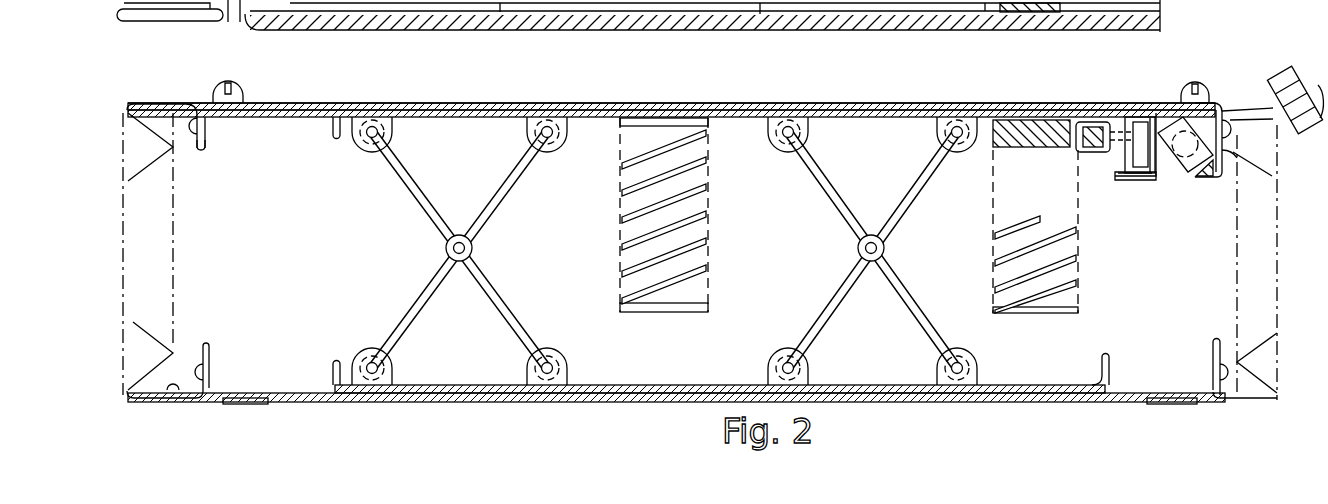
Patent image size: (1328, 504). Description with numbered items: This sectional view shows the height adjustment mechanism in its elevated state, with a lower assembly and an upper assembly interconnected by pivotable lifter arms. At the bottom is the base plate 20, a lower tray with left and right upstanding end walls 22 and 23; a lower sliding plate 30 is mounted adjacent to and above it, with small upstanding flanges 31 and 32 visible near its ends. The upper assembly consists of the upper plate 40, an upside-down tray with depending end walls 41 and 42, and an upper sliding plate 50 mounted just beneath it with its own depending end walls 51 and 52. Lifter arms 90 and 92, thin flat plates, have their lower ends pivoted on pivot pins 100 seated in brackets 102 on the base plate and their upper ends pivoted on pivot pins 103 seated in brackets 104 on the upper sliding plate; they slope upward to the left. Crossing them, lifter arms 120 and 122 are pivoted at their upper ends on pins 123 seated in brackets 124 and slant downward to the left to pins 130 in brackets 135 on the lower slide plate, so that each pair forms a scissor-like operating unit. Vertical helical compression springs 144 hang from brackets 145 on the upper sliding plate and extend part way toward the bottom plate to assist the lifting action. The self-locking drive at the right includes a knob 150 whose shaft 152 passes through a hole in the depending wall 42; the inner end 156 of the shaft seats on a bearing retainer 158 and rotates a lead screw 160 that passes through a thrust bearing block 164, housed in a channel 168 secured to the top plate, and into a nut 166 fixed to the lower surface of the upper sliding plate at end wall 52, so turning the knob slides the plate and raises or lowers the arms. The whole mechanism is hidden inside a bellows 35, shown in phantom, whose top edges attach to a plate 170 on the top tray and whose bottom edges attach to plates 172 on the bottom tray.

The base plate 20 is at (700, 392).
The left upstanding end wall 22 is at (198, 352).
The right upstanding end wall 23 is at (1213, 350).
The lower sliding plate 30 is at (618, 388).
The upstanding stop flange 31 is at (333, 378).
The upstanding stop flange 32 is at (1108, 378).
The bellows 35 is at (142, 176).
The upper plate 40 is at (632, 110).
The left depending end wall 41 is at (207, 138).
The right depending end wall 42 is at (1208, 178).
The upper sliding plate 50 is at (580, 118).
The left depending end wall 51 is at (337, 138).
The right depending end wall 52 is at (1102, 152).
The lifter arm 90 is at (513, 318).
The lifter arm 92 is at (917, 302).
The pivot pin 100 is at (547, 355).
The bracket 102 is at (372, 352).
The pivot pin 103 is at (372, 145).
The bracket 104 is at (390, 133).
The lifter arm 120 is at (497, 225).
The lifter arm 122 is at (905, 222).
The pin 123 is at (546, 150).
The bracket 124 is at (937, 131).
The pin 130 is at (392, 368).
The bracket 135 is at (805, 370).
The helical compression spring 144 is at (628, 220).
The bracket 145 is at (594, 112).
The knob 150 is at (1285, 75).
The shaft 152 is at (1262, 112).
The inner end of knob shaft 156 is at (1170, 180).
The bearing retainer 158 is at (1172, 118).
The lead screw 160 is at (1008, 148).
The thrust bearing block 164 is at (1135, 125).
The nut 166 is at (1087, 152).
The channel 168 is at (1133, 178).
The plate 170 is at (182, 105).
The plate 172 is at (184, 398).